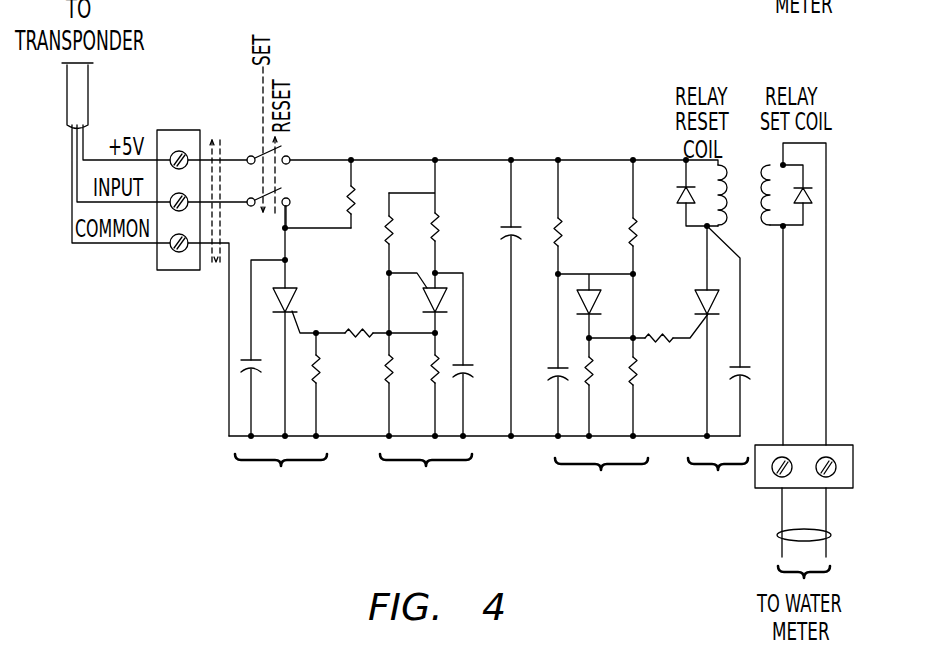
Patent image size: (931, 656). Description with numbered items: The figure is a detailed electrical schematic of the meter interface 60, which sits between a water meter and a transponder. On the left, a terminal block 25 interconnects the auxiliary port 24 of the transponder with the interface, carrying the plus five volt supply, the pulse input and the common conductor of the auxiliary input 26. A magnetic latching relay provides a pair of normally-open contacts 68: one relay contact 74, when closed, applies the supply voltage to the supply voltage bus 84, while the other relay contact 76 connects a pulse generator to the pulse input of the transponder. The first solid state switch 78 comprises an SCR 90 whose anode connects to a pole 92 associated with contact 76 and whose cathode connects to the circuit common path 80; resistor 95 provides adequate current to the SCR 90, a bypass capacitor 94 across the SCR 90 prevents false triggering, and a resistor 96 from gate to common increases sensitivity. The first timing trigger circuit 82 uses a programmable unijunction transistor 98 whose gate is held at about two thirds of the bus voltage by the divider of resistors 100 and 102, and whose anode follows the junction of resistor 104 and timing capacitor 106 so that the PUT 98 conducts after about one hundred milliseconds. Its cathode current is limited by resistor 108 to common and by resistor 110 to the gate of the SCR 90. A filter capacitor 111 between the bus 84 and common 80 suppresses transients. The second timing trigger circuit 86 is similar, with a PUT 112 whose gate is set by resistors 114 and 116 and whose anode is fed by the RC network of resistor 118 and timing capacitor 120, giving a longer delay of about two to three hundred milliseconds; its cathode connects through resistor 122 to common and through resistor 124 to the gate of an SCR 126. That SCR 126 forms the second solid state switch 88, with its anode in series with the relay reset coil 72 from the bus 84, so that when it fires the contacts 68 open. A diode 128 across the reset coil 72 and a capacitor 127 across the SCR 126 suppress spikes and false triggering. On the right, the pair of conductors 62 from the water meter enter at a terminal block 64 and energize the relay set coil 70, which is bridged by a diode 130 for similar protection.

The auxiliary port 24 is at (141, 117).
The terminal block 25 is at (178, 268).
The auxiliary input common conductor 26 is at (216, 264).
The meter interface 60 is at (486, 117).
The pair of conductors 62 is at (776, 537).
The terminal block 64 is at (838, 444).
The normally-open relay contacts 68 is at (258, 126).
The relay set coil 70 is at (770, 178).
The relay reset coil 72 is at (727, 212).
The relay contact 74 is at (282, 147).
The relay contact 76 is at (280, 192).
The first solid state switch 78 is at (281, 468).
The circuit common path 80 is at (228, 406).
The first timing trigger circuit 82 is at (426, 468).
The supply voltage bus 84 is at (404, 160).
The second timing trigger circuit 86 is at (601, 472).
The second solid state switch 88 is at (718, 472).
The silicon controlled rectifier 90 is at (297, 292).
The pole 92 is at (281, 231).
The bypass capacitor 94 is at (242, 364).
The resistor 95 is at (355, 200).
The resistor 96 is at (317, 380).
The programmable unijunction transistor 98 is at (444, 290).
The resistor 100 is at (386, 226).
The resistor 102 is at (386, 364).
The resistor 104 is at (439, 227).
The timing capacitor 106 is at (468, 366).
The resistor 108 is at (428, 383).
The resistor 110 is at (352, 330).
The filter capacitor 111 is at (504, 236).
The programmable unijunction transistor 112 is at (580, 298).
The resistor 114 is at (631, 224).
The resistor 116 is at (638, 378).
The resistor 118 is at (556, 223).
The timing capacitor 120 is at (556, 366).
The resistor 122 is at (592, 386).
The resistor 124 is at (657, 330).
The silicon controlled rectifier 126 is at (700, 292).
The capacitor 127 is at (744, 366).
The diode 128 is at (676, 196).
The diode 130 is at (811, 196).